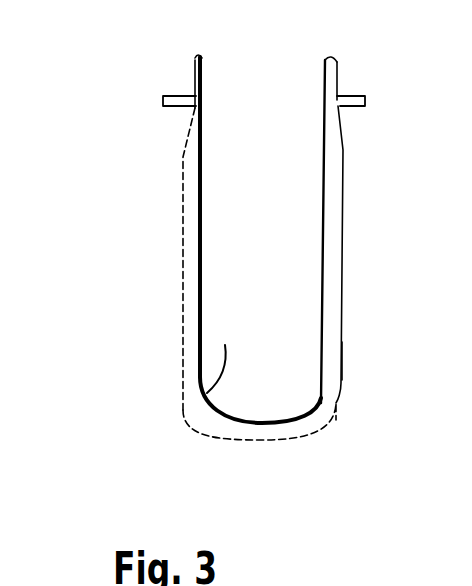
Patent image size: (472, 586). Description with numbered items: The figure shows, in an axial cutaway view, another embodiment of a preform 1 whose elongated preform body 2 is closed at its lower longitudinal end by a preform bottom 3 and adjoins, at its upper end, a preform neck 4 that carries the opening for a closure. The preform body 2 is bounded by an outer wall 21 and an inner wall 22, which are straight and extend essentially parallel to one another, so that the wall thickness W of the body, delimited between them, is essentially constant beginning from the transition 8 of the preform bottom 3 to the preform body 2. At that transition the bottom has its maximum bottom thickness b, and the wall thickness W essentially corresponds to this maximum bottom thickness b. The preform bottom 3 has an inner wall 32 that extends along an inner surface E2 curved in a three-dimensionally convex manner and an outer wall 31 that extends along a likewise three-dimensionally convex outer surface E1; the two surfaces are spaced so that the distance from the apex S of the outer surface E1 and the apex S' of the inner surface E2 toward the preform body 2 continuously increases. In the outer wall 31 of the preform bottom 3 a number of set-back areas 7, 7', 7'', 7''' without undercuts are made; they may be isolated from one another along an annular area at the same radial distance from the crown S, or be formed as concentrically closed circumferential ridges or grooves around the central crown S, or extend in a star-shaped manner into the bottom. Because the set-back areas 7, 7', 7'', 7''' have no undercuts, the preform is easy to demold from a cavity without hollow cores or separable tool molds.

The preform 1 is at (128, 234).
The preform body 2 is at (182, 287).
The outer wall 21 is at (182, 322).
The inner wall 22 is at (322, 173).
The preform bottom 3 is at (338, 407).
The outer wall 31 is at (184, 406).
The inner wall 32 is at (225, 345).
The preform neck 4 is at (193, 72).
The set-back area 7 is at (345, 456).
The set-back area 7' is at (162, 470).
The set-back area 7'' is at (308, 477).
The set-back area 7''' is at (214, 477).
The transition 8 is at (342, 342).
The outer surface E1 is at (297, 418).
The inner surface E2 is at (200, 420).
The apex (crown) S is at (267, 488).
The apex S' is at (260, 370).
The wall thickness W is at (275, 220).
The maximum bottom thickness b is at (290, 384).